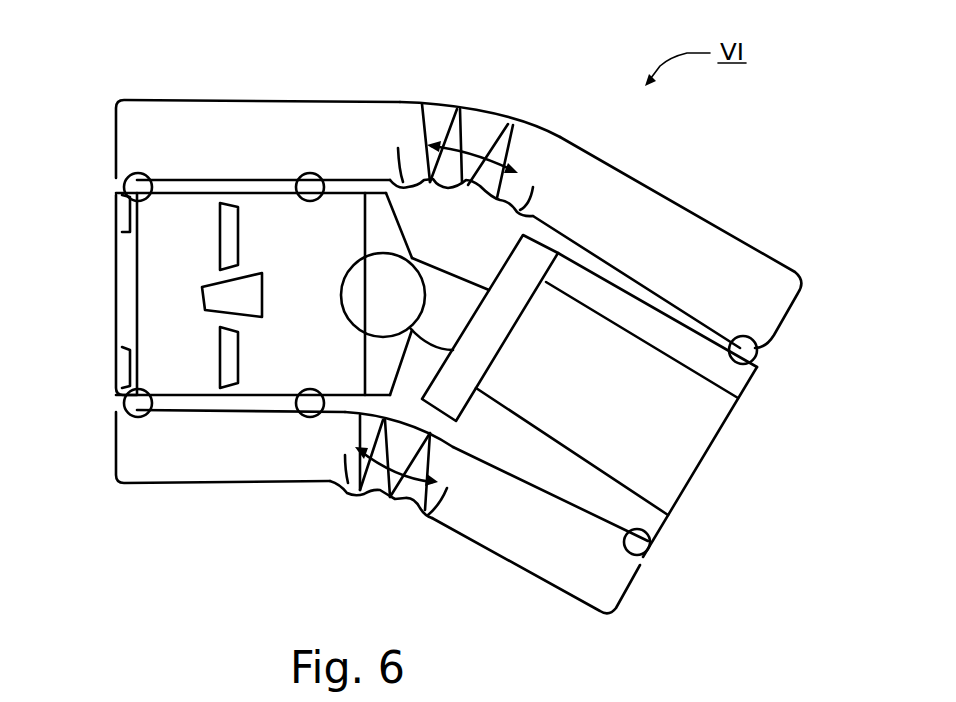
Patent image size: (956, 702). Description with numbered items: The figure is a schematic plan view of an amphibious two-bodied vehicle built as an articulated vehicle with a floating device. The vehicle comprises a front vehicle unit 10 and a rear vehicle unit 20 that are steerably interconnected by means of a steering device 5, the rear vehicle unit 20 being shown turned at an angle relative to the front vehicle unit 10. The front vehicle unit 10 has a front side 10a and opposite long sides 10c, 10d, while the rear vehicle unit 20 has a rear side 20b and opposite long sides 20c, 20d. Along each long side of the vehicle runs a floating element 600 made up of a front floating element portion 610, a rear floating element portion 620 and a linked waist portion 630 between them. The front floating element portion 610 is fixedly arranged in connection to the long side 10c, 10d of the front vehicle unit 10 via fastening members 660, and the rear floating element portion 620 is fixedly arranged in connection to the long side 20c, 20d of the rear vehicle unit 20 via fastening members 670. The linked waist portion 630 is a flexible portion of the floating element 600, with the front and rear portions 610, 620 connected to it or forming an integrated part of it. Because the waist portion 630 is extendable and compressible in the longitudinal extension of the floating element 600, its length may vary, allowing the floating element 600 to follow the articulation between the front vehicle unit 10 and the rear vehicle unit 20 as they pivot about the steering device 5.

The steering device 5 is at (442, 270).
The front vehicle unit 10 is at (212, 299).
The front side 10a is at (115, 238).
The long side 10c is at (136, 410).
The long side 10d is at (180, 193).
The rear vehicle unit 20 is at (610, 353).
The rear side 20b is at (725, 424).
The long side 20c is at (537, 482).
The long side 20d is at (587, 265).
The floating element 600 is at (433, 308).
The front floating element portion 610 is at (205, 96).
The rear floating element portion 620 is at (647, 183).
The linked waist portion 630 is at (477, 113).
The fastening members 660 is at (137, 185).
The fastening members 670 is at (757, 349).